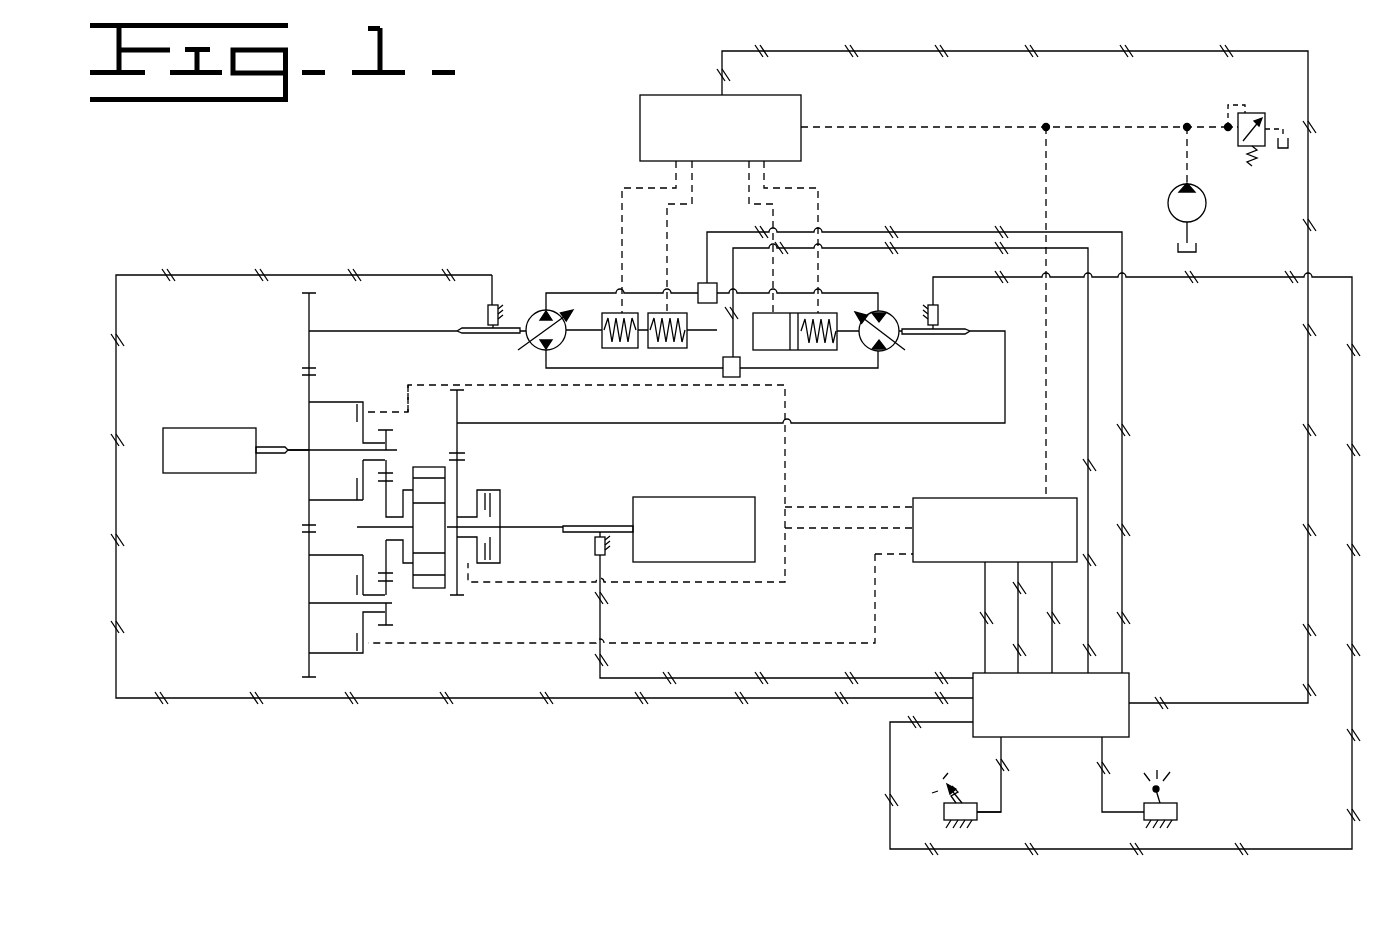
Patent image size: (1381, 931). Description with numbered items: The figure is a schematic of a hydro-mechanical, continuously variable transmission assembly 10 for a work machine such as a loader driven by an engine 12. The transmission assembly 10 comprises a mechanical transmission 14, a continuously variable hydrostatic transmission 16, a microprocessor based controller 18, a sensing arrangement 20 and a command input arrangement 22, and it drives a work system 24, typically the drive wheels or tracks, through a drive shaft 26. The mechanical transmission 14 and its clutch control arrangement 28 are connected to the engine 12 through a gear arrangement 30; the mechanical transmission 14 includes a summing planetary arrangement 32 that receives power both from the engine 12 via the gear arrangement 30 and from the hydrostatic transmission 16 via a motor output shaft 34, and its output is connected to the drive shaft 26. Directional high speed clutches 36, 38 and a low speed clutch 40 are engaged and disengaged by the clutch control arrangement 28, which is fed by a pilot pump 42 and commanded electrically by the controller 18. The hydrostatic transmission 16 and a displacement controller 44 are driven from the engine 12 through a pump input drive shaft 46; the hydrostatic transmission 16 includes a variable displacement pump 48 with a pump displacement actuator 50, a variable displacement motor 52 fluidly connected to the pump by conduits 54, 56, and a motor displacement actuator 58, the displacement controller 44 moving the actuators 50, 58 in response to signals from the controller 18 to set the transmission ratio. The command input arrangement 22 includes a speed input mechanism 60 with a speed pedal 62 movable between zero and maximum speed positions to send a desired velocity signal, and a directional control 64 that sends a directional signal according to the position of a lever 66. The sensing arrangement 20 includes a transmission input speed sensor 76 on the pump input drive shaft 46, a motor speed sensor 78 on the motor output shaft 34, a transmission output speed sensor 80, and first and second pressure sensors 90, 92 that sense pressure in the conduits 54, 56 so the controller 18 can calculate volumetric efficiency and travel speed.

The transmission assembly 10 is at (283, 172).
The engine 12 is at (233, 430).
The mechanical transmission 14 is at (277, 614).
The hydrostatic transmission 16 is at (573, 180).
The controller 18 is at (1130, 681).
The sensing arrangement 20 is at (730, 734).
The command input arrangement 22 is at (922, 890).
The work system 24 is at (650, 497).
The drive shaft 26 is at (578, 526).
The clutch control arrangement 28 is at (974, 485).
The gear arrangement 30 is at (284, 508).
The summing planetary arrangement 32 is at (440, 456).
The motor output shaft 34 is at (673, 412).
The directional high speed clutch 36 is at (365, 400).
The directional high speed clutch 38 is at (358, 655).
The low speed clutch 40 is at (486, 492).
The pilot pump 42 is at (1205, 200).
The displacement controller 44 is at (657, 110).
The pump input drive shaft 46 is at (383, 330).
The variable displacement pump 48 is at (518, 308).
The pump displacement actuator 50 is at (600, 307).
The variable displacement motor 52 is at (905, 338).
The conduit 54 is at (574, 292).
The conduit 56 is at (857, 367).
The motor displacement actuator 58 is at (835, 295).
The speed input mechanism 60 is at (917, 822).
The speed pedal 62 is at (960, 790).
The directional control 64 is at (1190, 814).
The lever 66 is at (1165, 797).
The transmission input speed sensor 76 is at (488, 310).
The motor speed sensor 78 is at (940, 315).
The transmission output speed sensor 80 is at (595, 545).
The first pressure sensor 90 is at (730, 318).
The second pressure sensor 92 is at (742, 372).